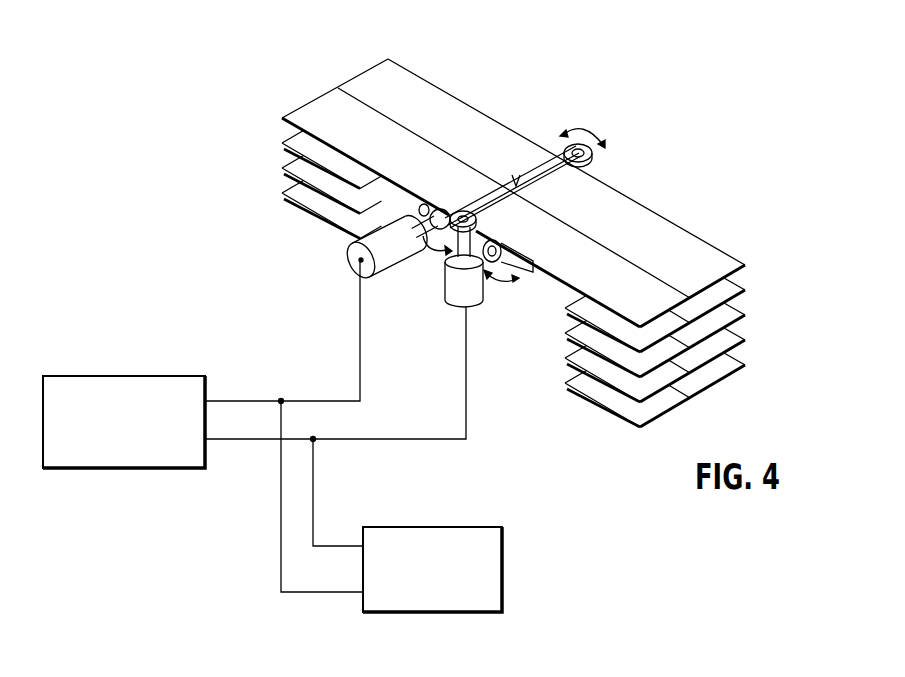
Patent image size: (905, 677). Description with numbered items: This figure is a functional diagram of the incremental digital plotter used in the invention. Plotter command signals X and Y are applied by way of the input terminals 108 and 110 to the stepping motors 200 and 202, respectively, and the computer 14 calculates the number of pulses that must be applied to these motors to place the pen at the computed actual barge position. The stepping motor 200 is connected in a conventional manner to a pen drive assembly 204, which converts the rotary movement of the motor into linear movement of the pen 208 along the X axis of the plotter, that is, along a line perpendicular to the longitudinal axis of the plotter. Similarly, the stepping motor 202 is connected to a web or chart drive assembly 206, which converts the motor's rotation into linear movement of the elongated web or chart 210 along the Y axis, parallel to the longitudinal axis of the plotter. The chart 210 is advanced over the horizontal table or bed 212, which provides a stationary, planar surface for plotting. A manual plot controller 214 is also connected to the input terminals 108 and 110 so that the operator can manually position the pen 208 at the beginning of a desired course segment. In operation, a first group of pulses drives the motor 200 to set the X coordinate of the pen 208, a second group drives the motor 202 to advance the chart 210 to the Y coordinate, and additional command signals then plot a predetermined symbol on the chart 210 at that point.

The computer 14 is at (104, 460).
The input terminal 108 is at (313, 438).
The input terminal 110 is at (281, 400).
The stepping motor 200 is at (477, 301).
The stepping motor 202 is at (389, 275).
The pen drive assembly 204 is at (474, 211).
The web or chart drive assembly 206 is at (436, 207).
The pen 208 is at (518, 178).
The web or chart 210 is at (478, 124).
The table or bed 212 is at (514, 279).
The manual plot controller 214 is at (488, 532).